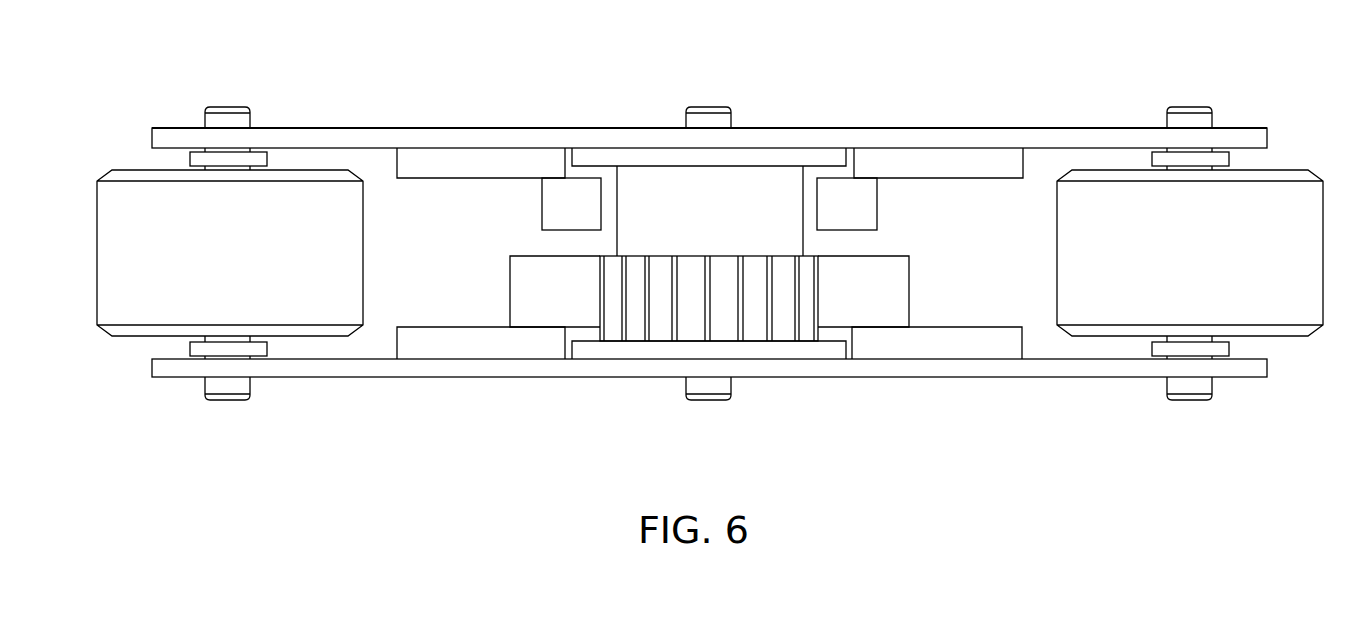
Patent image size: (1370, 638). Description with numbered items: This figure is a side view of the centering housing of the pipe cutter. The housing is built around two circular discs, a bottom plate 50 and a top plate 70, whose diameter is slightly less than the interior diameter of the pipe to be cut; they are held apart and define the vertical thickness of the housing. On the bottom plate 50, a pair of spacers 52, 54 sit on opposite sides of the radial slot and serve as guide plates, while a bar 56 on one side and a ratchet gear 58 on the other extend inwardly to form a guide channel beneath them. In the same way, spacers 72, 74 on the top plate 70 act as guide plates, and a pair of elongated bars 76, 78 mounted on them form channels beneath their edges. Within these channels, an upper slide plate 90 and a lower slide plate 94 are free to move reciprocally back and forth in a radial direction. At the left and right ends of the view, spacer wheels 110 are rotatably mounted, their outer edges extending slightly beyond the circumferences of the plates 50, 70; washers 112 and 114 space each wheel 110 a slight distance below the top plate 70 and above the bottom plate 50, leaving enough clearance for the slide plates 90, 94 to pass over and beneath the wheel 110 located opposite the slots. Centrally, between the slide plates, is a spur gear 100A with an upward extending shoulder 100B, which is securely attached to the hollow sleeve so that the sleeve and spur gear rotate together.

The bottom plate 50 is at (492, 373).
The spacer 52 is at (462, 327).
The spacer 54 is at (997, 327).
The bar 56 is at (524, 283).
The ratchet gear 58 is at (897, 286).
The top plate 70 is at (527, 136).
The spacer 72 is at (450, 166).
The spacer 74 is at (992, 167).
The elongated bar 76 is at (585, 195).
The elongated bar 78 is at (863, 192).
The slide plate 90 is at (660, 176).
The slide plate 94 is at (622, 353).
The spur gear 100A is at (757, 330).
The upward extending shoulder 100B is at (762, 188).
The spacer wheel 110 is at (123, 208).
The washer 112 is at (268, 155).
The washer 114 is at (190, 346).